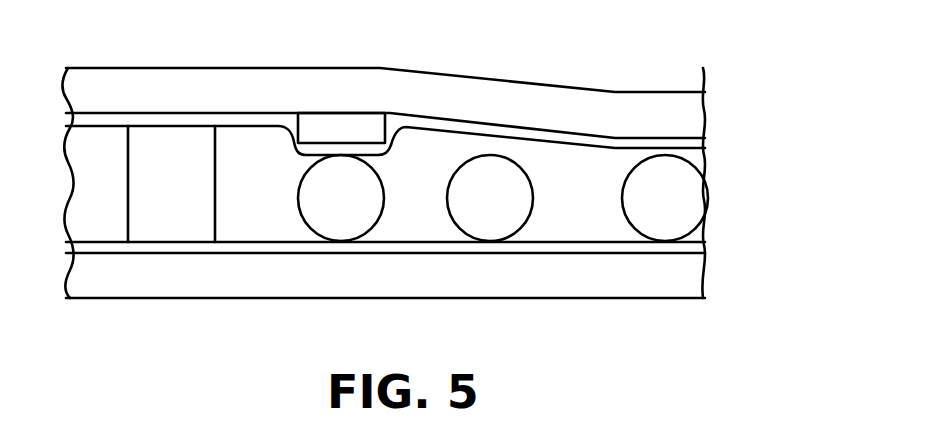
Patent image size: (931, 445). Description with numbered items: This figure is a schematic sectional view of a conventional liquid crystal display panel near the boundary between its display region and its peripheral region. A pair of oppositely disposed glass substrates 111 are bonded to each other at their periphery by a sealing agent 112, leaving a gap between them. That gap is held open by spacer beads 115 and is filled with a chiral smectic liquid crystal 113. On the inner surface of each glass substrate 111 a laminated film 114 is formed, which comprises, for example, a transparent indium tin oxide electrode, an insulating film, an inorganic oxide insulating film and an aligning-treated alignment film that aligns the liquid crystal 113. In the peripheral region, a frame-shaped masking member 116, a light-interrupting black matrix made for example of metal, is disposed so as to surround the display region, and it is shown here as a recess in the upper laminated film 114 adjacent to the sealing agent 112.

The glass substrate 111 is at (564, 100).
The sealing agent 112 is at (175, 233).
The chiral smectic liquid crystal 113 is at (427, 235).
The laminated film 114 is at (682, 140).
The spacer bead 115 is at (690, 187).
The masking member 116 is at (340, 125).